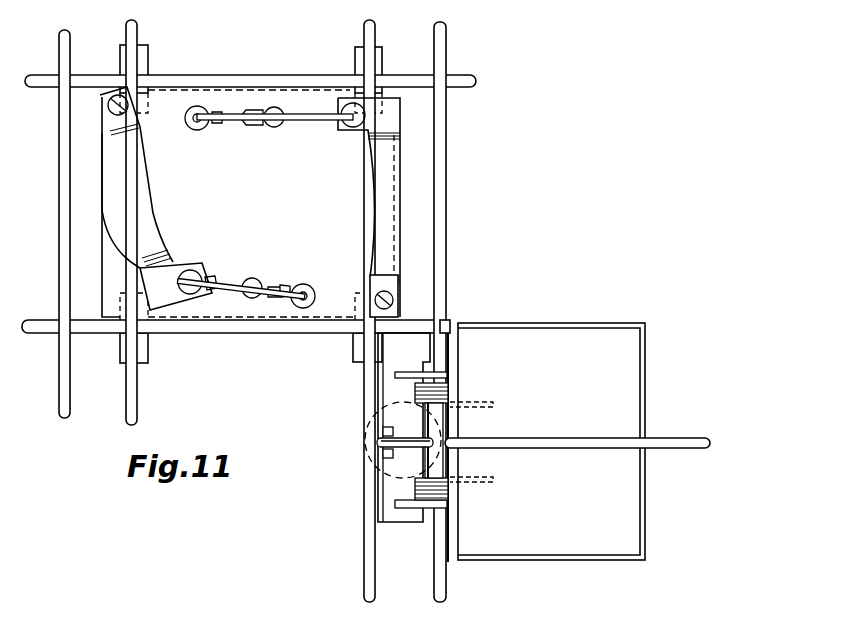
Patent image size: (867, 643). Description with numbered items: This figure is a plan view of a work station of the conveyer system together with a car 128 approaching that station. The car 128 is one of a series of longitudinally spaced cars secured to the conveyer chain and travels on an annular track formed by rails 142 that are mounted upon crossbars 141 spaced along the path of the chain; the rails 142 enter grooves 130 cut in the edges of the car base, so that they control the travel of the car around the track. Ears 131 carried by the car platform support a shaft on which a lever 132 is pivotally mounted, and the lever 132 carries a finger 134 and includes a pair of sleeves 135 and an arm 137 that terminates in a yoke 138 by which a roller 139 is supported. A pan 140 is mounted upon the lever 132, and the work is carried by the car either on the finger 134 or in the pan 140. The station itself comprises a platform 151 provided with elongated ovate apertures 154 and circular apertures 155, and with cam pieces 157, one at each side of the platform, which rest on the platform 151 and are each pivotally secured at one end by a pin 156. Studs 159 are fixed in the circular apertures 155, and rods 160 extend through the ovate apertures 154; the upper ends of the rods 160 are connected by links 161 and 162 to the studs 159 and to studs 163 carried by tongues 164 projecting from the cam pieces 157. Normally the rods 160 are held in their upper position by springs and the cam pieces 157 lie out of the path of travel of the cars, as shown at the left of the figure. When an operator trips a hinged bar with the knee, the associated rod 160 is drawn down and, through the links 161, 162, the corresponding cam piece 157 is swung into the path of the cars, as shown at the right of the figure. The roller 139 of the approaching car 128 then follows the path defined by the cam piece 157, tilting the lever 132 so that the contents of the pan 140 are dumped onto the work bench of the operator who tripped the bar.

The car 128 is at (362, 482).
The groove 130 is at (388, 392).
The ear 131 is at (437, 378).
The lever 132 is at (460, 400).
The finger 134 is at (535, 434).
The sleeve 135 is at (447, 392).
The arm 137 is at (420, 453).
The yoke 138 is at (378, 445).
The roller 139 is at (380, 431).
The pan 140 is at (542, 441).
The crossbar 141 is at (232, 78).
The rail 142 is at (249, 303).
The platform 151 is at (228, 203).
The elongated ovate aperture 154 is at (250, 122).
The circular aperture 155 is at (199, 130).
The pin 156 is at (108, 110).
The cam piece 157 is at (136, 178).
The stud 159 is at (197, 106).
The rod 160 is at (268, 125).
The link 161 is at (222, 110).
The link 162 is at (290, 111).
The stud 163 is at (350, 120).
The tongue 164 is at (378, 140).